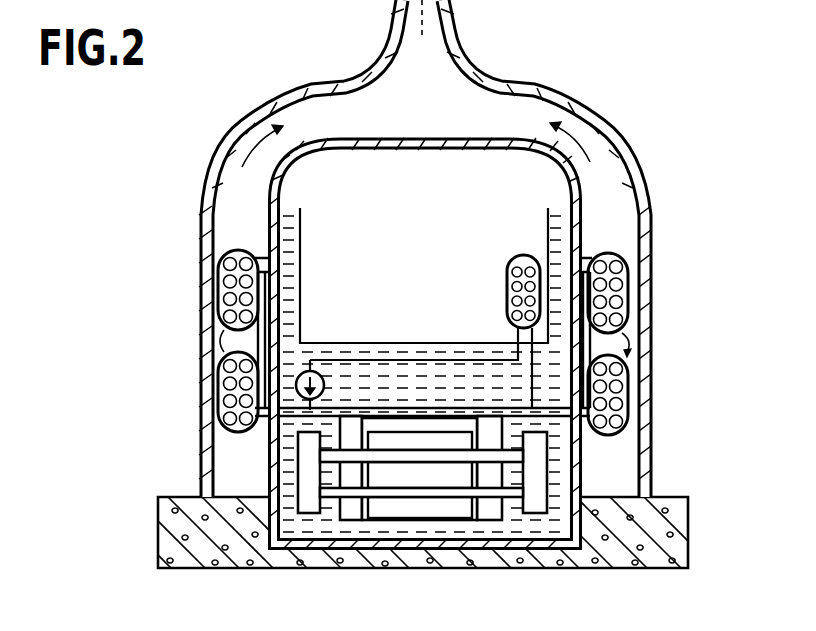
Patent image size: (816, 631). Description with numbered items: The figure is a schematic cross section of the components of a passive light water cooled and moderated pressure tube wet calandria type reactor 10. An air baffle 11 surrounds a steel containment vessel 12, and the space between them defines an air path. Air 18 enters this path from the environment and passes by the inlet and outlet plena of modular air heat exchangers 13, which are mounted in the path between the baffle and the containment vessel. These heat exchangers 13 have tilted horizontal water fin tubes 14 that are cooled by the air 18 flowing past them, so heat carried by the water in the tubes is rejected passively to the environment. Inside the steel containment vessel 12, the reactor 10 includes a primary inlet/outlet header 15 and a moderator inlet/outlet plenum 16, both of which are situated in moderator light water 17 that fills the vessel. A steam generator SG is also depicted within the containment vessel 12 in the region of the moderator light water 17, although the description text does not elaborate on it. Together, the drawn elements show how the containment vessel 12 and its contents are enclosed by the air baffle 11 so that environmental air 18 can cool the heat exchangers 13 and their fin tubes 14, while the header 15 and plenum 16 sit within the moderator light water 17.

The reactor 10 is at (599, 80).
The air baffle 11 is at (232, 125).
The steel containment vessel 12 is at (268, 206).
The modular air heat exchangers 13 is at (218, 292).
The tilted horizontal water fin tubes 14 is at (220, 345).
The primary inlet/outlet header 15 is at (298, 450).
The moderator inlet/outlet plenum 16 is at (357, 414).
The moderator light water 17 is at (560, 470).
The air 18 is at (241, 478).
The steam generator SG is at (425, 314).